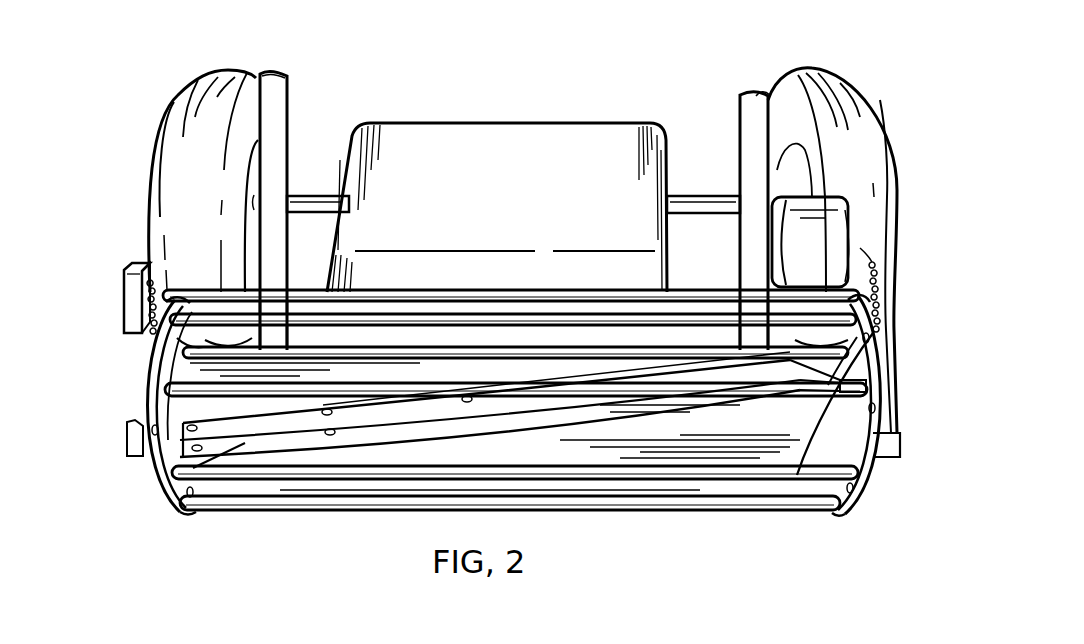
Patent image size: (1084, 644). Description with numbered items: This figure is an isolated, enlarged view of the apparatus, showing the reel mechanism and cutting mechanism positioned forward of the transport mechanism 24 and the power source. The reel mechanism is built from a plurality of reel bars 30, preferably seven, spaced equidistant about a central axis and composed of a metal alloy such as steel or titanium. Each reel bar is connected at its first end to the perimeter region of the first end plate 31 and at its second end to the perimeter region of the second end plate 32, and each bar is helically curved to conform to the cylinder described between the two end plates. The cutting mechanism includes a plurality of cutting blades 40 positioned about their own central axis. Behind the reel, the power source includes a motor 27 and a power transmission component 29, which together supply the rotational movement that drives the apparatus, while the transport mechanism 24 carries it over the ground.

The transport mechanism 24 is at (168, 108).
The motor 27 is at (858, 240).
The power transmission component 29 is at (575, 291).
The reel bars 30 is at (178, 338).
The first end plate 31 is at (168, 362).
The second end plate 32 is at (878, 467).
The cutting blades 40 is at (175, 478).